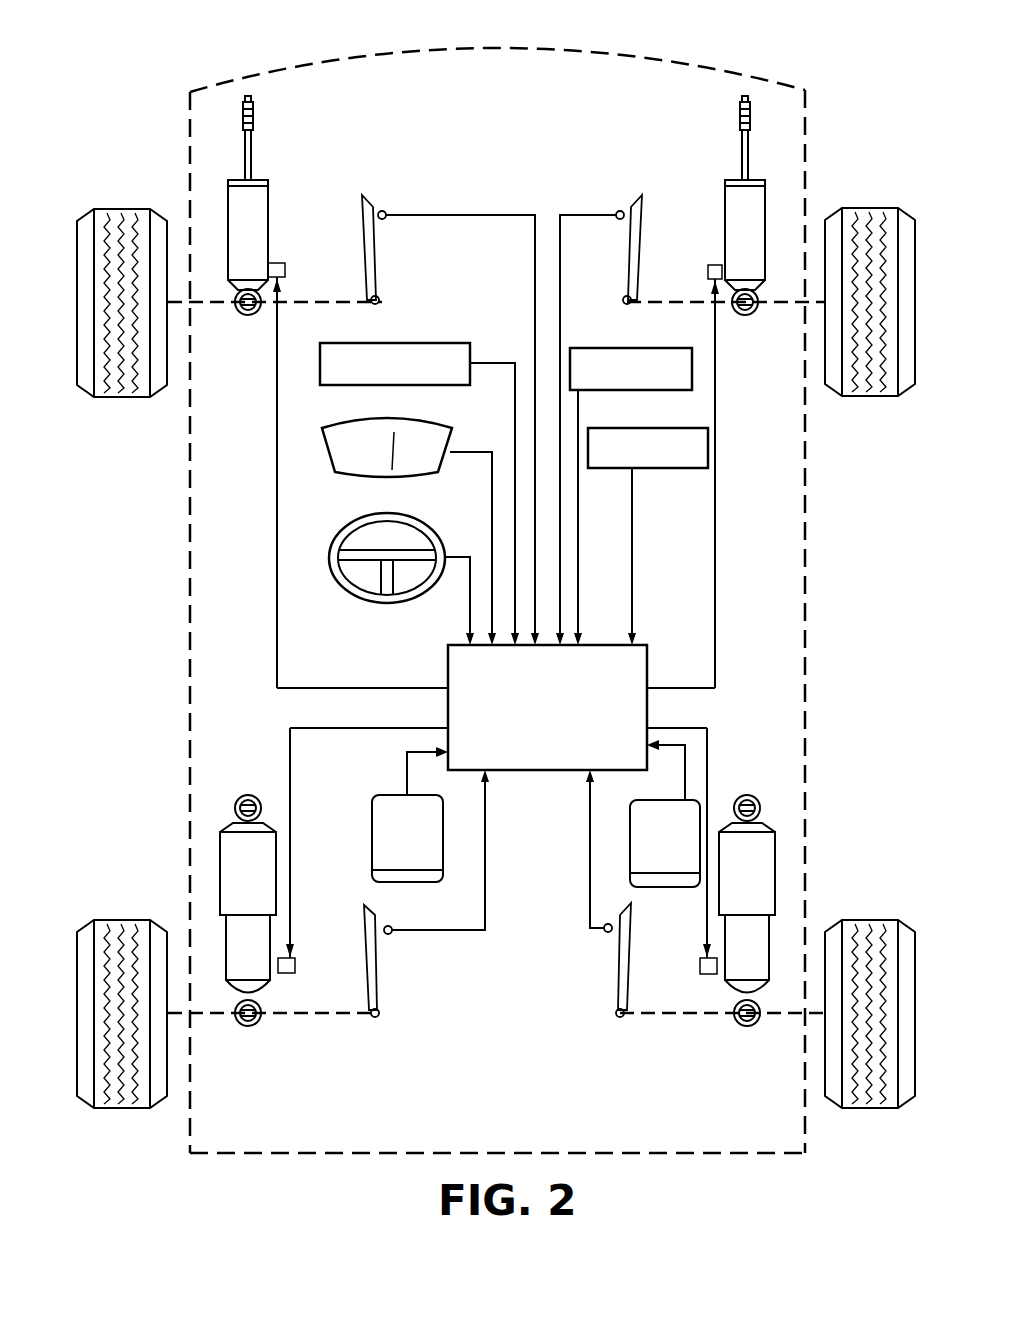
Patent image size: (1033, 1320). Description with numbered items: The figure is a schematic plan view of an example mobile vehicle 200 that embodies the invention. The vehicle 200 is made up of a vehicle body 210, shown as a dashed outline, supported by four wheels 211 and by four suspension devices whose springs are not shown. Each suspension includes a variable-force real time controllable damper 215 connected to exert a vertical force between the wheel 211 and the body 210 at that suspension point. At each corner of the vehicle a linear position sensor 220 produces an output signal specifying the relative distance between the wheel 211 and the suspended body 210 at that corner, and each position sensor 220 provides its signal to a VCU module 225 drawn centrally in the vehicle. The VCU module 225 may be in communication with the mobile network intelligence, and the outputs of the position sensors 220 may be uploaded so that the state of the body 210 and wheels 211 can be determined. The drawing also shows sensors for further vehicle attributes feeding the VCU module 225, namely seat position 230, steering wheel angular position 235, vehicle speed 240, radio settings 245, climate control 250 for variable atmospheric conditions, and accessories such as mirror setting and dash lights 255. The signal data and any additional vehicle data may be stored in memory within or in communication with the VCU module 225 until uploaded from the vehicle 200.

The mobile vehicle 200 is at (878, 44).
The vehicle body 210 is at (190, 92).
The wheel 211 is at (131, 212).
The variable-force real time controllable damper 215 is at (242, 198).
The linear position sensor 220 is at (375, 210).
The VCU module 225 is at (547, 707).
The seat position sensor 230 is at (536, 813).
The steering wheel angular position sensor 235 is at (393, 535).
The vehicle speed sensor 240 is at (409, 531).
The radio settings sensor 245 is at (419, 494).
The climate control sensor 250 is at (631, 496).
The accessories sensor 255 is at (648, 536).